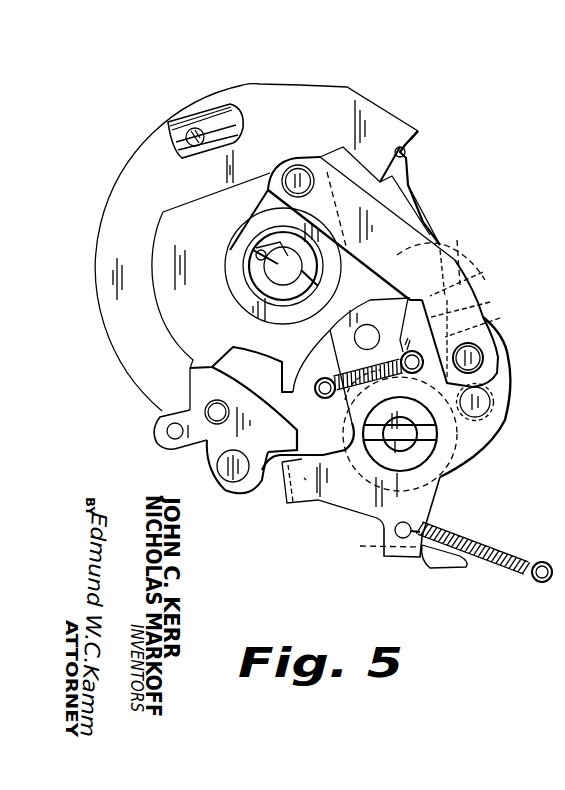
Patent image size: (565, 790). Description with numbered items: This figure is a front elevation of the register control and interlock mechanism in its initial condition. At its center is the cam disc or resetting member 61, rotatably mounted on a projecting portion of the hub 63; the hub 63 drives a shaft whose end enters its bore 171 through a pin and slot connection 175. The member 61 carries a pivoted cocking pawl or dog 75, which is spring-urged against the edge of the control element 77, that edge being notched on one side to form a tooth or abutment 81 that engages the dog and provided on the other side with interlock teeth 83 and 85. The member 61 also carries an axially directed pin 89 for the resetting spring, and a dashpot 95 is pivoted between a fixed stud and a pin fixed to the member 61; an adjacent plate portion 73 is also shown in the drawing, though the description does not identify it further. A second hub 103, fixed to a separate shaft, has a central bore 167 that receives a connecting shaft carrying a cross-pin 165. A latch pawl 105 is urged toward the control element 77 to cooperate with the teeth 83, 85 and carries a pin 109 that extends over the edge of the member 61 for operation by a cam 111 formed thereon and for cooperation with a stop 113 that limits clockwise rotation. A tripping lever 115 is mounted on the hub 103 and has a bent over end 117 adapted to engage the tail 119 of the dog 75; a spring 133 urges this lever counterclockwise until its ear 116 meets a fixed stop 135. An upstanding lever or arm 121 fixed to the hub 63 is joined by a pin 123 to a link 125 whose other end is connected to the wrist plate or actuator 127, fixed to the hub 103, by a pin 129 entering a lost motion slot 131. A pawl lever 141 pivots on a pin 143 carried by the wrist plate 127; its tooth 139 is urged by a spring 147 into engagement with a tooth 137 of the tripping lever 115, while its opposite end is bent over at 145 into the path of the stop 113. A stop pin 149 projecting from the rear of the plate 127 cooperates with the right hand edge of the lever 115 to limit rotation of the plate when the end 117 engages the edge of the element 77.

The cam disc or resetting member 61 is at (120, 190).
The hub 63 is at (251, 299).
The top plate 73 is at (327, 87).
The cocking pawl or dog 75 is at (190, 367).
The control element 77 is at (197, 197).
The tooth or abutment 81 is at (233, 352).
The interlock tooth 83 is at (400, 152).
The interlock tooth 85 is at (420, 222).
The axially directed pin 89 is at (224, 474).
The dashpot 95 is at (243, 93).
The hub 103 is at (437, 444).
The latch pawl 105 is at (483, 290).
The pin 109 is at (490, 302).
The cam 111 is at (408, 170).
The stop 113 is at (418, 137).
The tripping lever 115 is at (436, 500).
The ear 116 is at (360, 546).
The bent over end 117 is at (287, 487).
The tail 119 is at (268, 433).
The upstanding lever or arm 121 is at (247, 230).
The pin 123 is at (298, 164).
The link 125 is at (396, 214).
The wrist plate or actuator 127 is at (528, 385).
The pin 129 is at (485, 355).
The lost motion slot 131 is at (500, 318).
The spring 133 is at (465, 540).
The fixed stop 135 is at (432, 567).
The tooth 137 is at (354, 386).
The tooth 139 is at (342, 418).
The pawl lever 141 is at (447, 250).
The pin 143 is at (373, 331).
The bent over end 145 is at (470, 272).
The spring 147 is at (362, 372).
The stop pin 149 is at (495, 431).
The cross-pin 165 is at (400, 434).
The central bore 167 is at (396, 450).
The bore 171 is at (264, 266).
The slot 175 is at (278, 252).